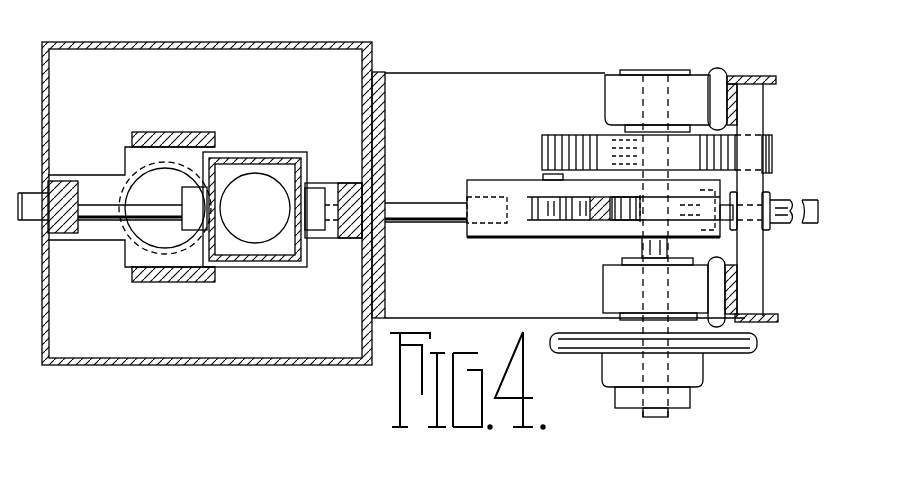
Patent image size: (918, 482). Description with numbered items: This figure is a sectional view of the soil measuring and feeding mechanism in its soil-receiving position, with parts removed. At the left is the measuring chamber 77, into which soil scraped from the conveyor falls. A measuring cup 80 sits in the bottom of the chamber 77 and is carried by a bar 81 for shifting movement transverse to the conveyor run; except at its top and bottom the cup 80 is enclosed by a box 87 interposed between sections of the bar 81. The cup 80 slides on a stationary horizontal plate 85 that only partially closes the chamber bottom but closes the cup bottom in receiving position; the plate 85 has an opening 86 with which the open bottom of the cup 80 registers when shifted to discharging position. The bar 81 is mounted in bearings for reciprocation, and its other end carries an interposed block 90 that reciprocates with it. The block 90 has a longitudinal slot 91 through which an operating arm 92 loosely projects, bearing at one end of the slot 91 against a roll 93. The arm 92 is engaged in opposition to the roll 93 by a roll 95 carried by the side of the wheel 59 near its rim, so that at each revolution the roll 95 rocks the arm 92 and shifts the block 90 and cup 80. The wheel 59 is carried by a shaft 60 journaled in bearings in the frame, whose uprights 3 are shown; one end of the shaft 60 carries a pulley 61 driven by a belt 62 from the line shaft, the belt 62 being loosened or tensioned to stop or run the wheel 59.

The measuring chamber 77 is at (260, 58).
The bar 81 is at (100, 205).
The opening 86 is at (146, 232).
The stationary horizontal plate 85 is at (135, 258).
The measuring cup 80 is at (265, 235).
The box 87 is at (290, 134).
The wheel 59 is at (577, 140).
The operating arm 92 is at (607, 196).
The block 90 is at (515, 236).
The roll 93 is at (570, 238).
The roll 95 is at (627, 218).
The longitudinal slot 91 is at (658, 207).
The uprights 3 is at (745, 76).
The belt 62 is at (760, 347).
The pulley 61 is at (728, 356).
The shaft 60 is at (660, 412).